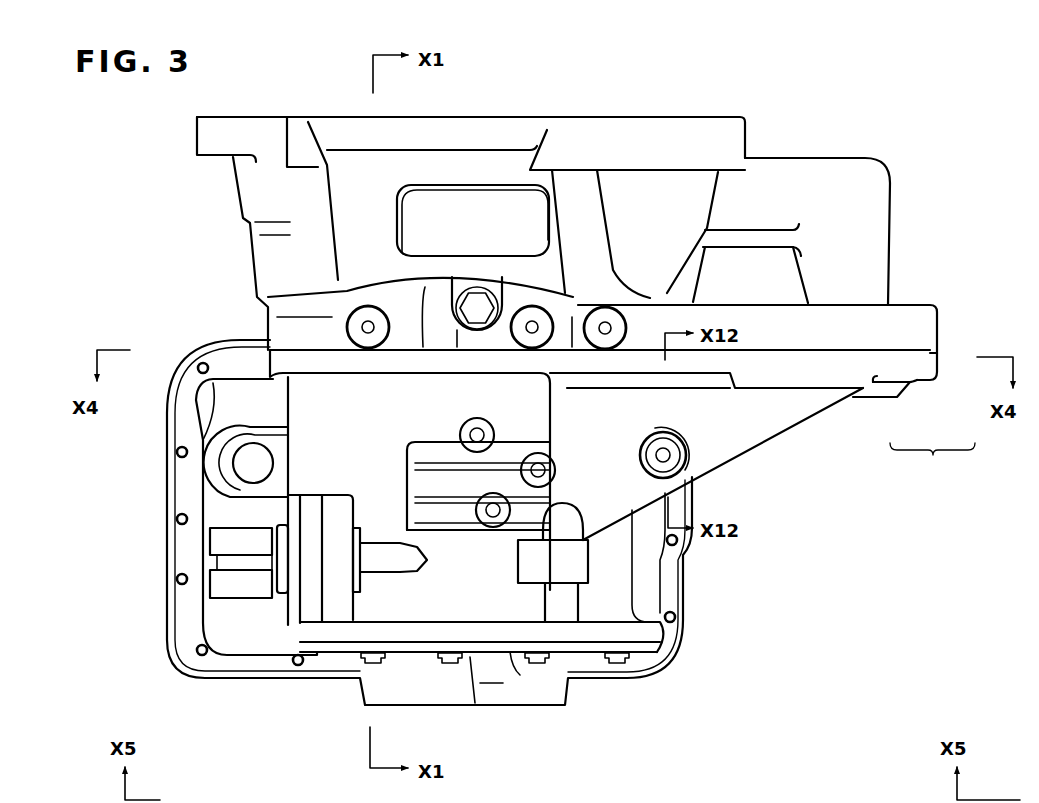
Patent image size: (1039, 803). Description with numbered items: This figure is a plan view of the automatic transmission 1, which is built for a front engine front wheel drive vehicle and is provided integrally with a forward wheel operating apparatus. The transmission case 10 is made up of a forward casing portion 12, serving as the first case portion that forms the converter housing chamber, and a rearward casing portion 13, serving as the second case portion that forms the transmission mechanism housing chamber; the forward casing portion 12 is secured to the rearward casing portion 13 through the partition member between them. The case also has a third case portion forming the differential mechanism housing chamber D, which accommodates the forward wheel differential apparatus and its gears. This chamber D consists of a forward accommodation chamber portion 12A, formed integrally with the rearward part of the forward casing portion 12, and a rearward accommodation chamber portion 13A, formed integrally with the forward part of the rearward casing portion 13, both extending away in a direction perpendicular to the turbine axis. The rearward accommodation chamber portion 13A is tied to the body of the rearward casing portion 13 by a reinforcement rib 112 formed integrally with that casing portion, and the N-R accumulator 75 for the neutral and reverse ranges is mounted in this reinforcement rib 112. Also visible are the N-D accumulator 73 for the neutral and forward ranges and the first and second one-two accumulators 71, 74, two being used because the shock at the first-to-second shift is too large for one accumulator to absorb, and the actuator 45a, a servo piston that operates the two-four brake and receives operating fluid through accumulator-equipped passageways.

The automatic transmission 1 is at (801, 140).
The transmission case 10 is at (912, 171).
The forward casing portion 12 is at (879, 212).
The forward accommodation chamber portion 12A is at (948, 356).
The rearward casing portion 13 is at (622, 590).
The rearward accommodation chamber portion 13A is at (913, 376).
The actuator 45a is at (337, 491).
The first 1-2 accumulator 71 is at (536, 318).
The N-D accumulator 73 is at (612, 311).
The second 1-2 accumulator 74 is at (369, 318).
The N-R accumulator 75 is at (683, 464).
The reinforcement rib 112 is at (758, 427).
The differential mechanism housing chamber D is at (932, 458).